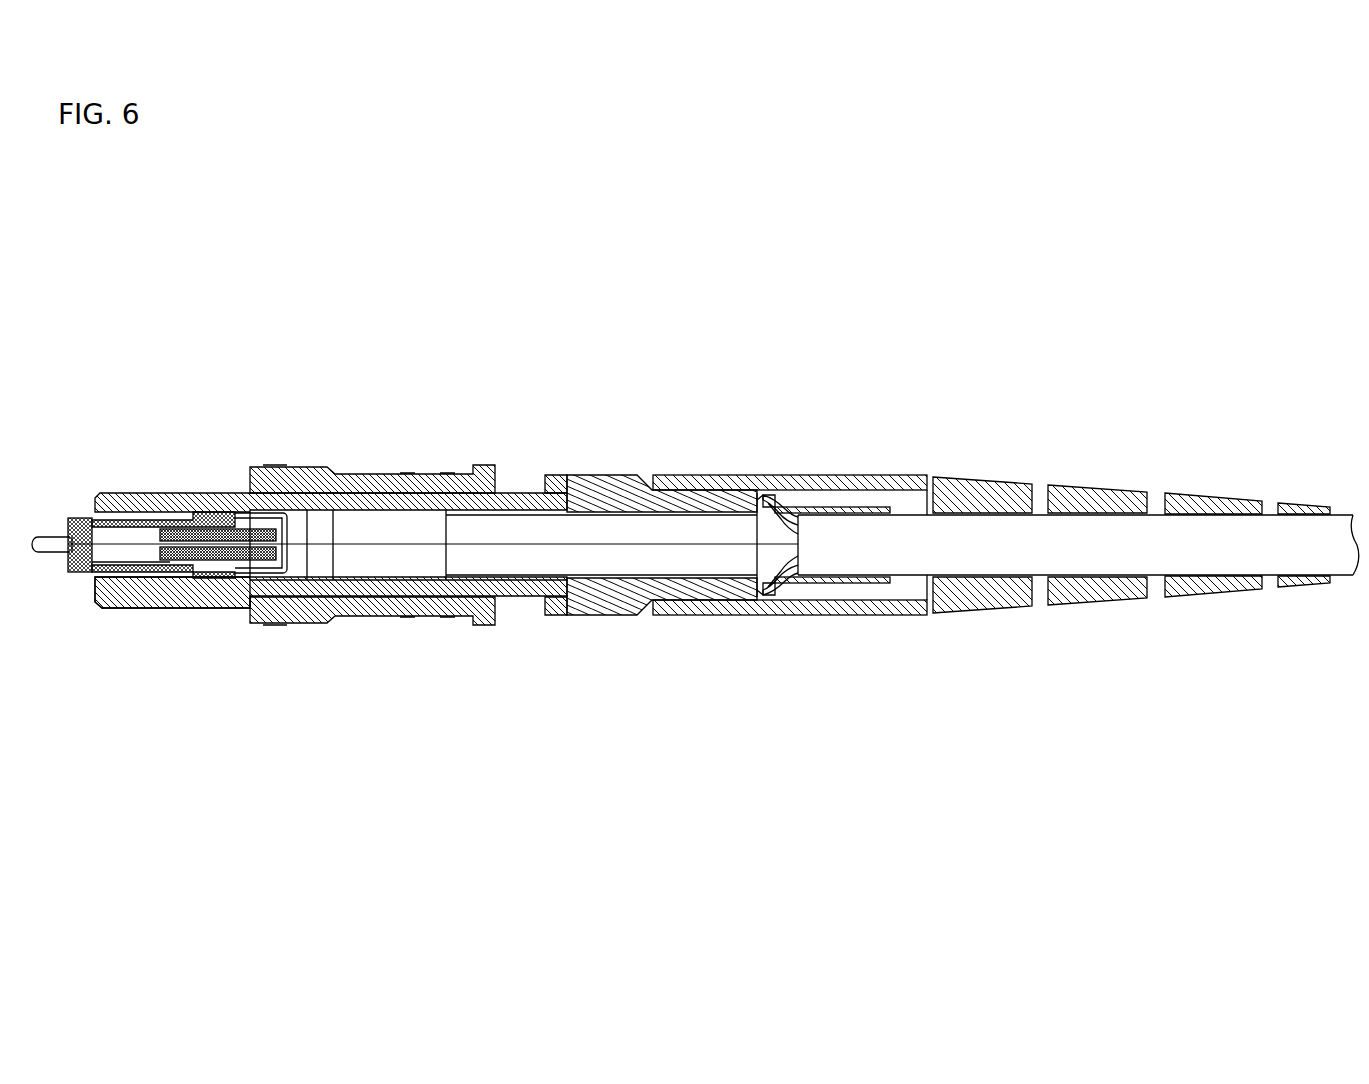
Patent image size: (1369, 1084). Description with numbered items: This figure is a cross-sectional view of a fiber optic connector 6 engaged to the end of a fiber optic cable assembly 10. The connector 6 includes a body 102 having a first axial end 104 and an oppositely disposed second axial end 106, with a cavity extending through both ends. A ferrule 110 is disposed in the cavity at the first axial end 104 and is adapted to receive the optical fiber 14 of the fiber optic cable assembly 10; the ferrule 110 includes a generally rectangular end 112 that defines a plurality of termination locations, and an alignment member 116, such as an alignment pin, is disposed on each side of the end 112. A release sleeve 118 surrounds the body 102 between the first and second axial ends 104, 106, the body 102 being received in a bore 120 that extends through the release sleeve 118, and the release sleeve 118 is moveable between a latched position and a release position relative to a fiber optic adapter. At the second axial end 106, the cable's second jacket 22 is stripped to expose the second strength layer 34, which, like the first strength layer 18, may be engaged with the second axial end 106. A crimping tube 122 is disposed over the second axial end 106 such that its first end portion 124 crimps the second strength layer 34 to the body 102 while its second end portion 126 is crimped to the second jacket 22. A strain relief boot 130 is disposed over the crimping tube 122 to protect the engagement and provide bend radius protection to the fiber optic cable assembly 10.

The connector 6 is at (162, 466).
The fiber optic cable assembly 10 is at (1152, 520).
The optical fiber 14 is at (380, 545).
The first strength layer 18 is at (770, 522).
The second jacket 22 is at (912, 503).
The second strength layer 34 is at (791, 568).
The body 102 is at (207, 622).
The first axial end 104 is at (113, 610).
The second axial end 106 is at (633, 615).
The ferrule 110 is at (172, 520).
The end 112 is at (68, 573).
The alignment member 116 is at (45, 500).
The release sleeve 118 is at (373, 474).
The bore 120 is at (355, 596).
The crimping tube 122 is at (780, 497).
The first end portion 124 is at (672, 490).
The second end portion 126 is at (862, 502).
The strain relief boot 130 is at (892, 615).